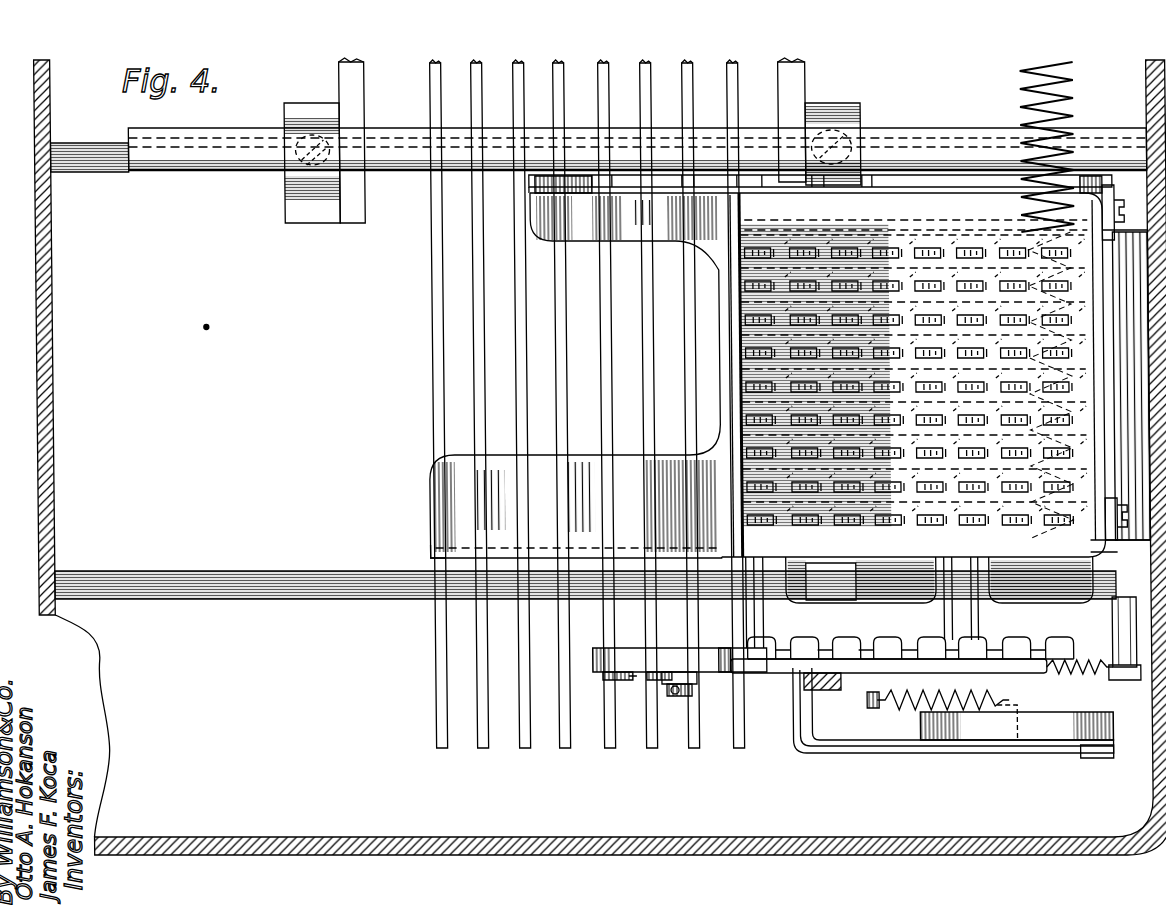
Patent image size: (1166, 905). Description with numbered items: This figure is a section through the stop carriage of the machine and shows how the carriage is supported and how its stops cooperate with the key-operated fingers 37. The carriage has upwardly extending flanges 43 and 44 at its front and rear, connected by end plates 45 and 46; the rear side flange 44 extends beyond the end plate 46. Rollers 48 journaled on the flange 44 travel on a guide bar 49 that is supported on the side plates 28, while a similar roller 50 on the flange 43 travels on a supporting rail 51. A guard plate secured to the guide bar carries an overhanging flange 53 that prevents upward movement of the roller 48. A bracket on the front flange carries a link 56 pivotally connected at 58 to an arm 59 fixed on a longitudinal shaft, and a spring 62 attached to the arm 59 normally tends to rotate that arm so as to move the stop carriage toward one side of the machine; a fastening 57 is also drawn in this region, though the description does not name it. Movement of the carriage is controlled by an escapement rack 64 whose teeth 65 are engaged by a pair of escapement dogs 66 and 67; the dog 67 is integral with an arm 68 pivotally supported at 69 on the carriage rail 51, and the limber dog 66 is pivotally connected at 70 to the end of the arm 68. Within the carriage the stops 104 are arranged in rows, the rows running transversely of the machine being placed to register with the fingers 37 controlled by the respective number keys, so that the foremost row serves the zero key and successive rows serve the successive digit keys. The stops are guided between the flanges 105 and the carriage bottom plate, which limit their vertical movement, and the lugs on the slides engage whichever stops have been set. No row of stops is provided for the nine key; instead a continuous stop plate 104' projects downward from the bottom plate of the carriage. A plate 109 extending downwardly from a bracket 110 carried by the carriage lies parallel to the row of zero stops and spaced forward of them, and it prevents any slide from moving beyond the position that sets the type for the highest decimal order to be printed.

The side plates 28 is at (1140, 700).
The finger 37 is at (735, 318).
The flange 43 is at (1120, 534).
The flange 44 is at (577, 190).
The end plate 45 is at (1126, 357).
The end plate 46 is at (735, 352).
The rollers 48 is at (992, 135).
The guide bar 49 is at (905, 152).
The roller 50 is at (818, 598).
The supporting rail 51 is at (340, 600).
The overhanging flange 53 is at (868, 132).
The link 56 is at (912, 748).
The screw 57 is at (770, 673).
The pivot 58 is at (1088, 758).
The arm 59 is at (1076, 712).
The spring 62 is at (893, 707).
The escapement rack 64 is at (886, 636).
The teeth 65 is at (911, 656).
The limber dog 66 is at (604, 648).
The dog 67 is at (720, 648).
The arm 68 is at (878, 668).
The pivot 69 is at (1012, 674).
The pivot 70 is at (628, 677).
The stops 104 is at (818, 409).
The stop plate 104' is at (915, 213).
The flanges 105 is at (735, 500).
The plate 109 is at (425, 552).
The bracket 110 is at (440, 490).